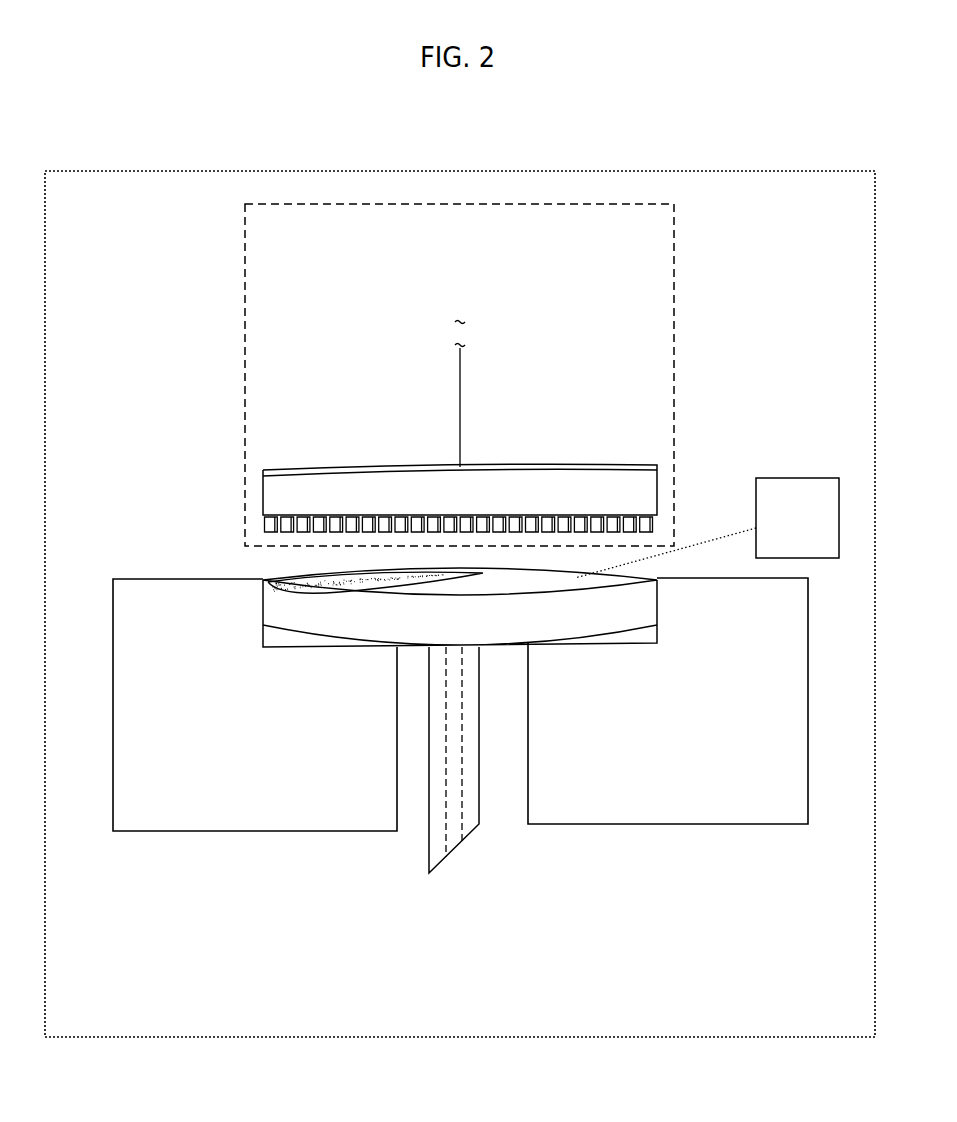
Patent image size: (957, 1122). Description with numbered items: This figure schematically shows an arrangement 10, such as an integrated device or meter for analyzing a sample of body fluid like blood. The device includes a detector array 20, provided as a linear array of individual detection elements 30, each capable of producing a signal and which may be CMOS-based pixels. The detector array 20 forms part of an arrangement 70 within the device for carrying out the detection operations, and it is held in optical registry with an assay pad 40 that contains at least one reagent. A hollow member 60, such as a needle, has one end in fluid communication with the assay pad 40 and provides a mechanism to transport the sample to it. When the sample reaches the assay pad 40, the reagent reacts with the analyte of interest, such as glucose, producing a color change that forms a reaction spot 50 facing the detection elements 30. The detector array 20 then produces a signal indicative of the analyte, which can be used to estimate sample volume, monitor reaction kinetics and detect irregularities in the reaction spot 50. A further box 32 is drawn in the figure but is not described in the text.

The arrangement 10 is at (260, 171).
The arrangement 70 is at (459, 375).
The detector array 20 is at (280, 500).
The detection elements 30 is at (260, 528).
The controller 32 is at (707, 528).
The assay pad 40 is at (576, 610).
The reaction spot 50 is at (270, 579).
The hollow member 60 is at (480, 746).